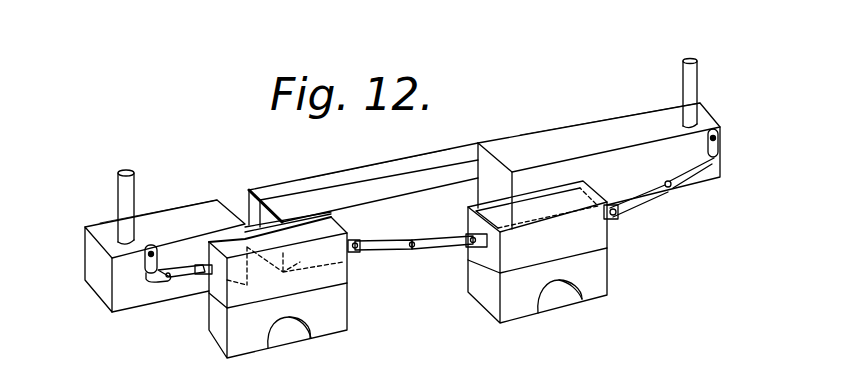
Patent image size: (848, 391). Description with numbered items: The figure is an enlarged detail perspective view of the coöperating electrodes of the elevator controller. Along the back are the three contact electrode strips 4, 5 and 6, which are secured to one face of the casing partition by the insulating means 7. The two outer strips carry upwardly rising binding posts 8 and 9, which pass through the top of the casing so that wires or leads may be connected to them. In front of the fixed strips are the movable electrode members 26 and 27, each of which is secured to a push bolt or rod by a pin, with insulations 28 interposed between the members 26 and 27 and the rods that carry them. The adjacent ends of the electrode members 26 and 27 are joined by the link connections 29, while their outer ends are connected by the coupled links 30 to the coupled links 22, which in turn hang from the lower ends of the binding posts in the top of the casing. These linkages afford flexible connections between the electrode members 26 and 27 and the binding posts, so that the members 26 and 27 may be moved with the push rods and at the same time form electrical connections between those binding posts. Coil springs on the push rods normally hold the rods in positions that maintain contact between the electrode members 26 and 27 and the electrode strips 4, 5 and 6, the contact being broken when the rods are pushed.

The contact electrode strip 4 is at (577, 140).
The contact electrode strip 5 is at (343, 192).
The contact electrode strip 6 is at (177, 228).
The insulating means 7 is at (197, 201).
The binding post 8 is at (692, 89).
The binding post 9 is at (122, 195).
The coupled links 22 is at (146, 274).
The electrode member 26 is at (537, 227).
The electrode member 27 is at (278, 260).
The insulations 28 is at (408, 303).
The link connections 29 is at (432, 247).
The coupled links 30 is at (207, 278).